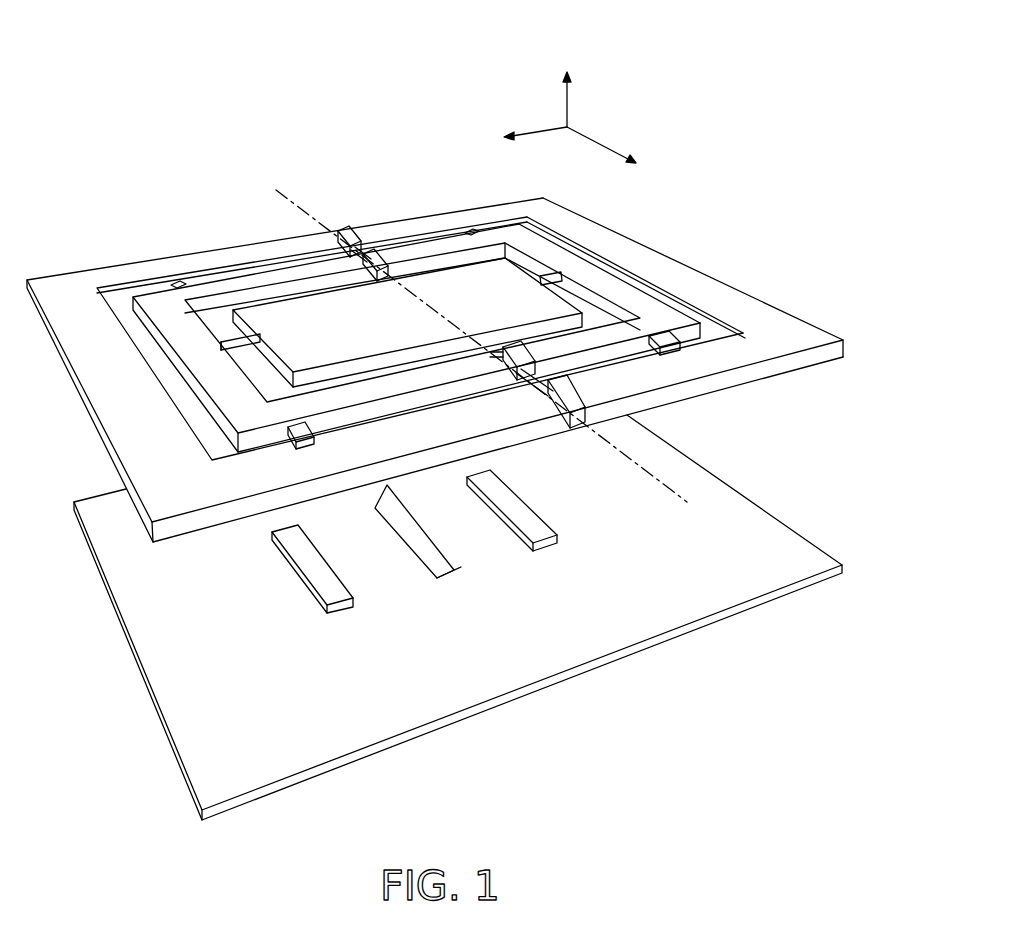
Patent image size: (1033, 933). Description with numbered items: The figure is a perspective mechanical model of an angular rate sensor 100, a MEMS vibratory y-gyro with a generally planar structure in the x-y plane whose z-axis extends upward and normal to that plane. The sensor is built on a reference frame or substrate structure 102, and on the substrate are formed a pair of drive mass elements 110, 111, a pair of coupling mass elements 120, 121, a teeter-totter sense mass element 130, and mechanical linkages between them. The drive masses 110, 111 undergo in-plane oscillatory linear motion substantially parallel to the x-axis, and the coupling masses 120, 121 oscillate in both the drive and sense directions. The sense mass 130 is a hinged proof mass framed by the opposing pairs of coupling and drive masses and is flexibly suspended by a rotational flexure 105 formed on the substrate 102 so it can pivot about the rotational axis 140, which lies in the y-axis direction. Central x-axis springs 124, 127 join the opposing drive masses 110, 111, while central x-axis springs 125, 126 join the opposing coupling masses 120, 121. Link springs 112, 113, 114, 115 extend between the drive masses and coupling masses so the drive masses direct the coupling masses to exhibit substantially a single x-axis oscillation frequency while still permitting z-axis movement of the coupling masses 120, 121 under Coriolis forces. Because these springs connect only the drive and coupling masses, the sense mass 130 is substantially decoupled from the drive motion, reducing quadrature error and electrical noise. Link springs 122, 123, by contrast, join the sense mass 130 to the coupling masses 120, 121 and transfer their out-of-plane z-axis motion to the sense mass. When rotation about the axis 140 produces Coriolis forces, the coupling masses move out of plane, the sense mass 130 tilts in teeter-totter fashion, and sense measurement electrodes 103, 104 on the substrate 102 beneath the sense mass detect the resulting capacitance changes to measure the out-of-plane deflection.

The angular rate sensor 100 is at (736, 62).
The substrate structure 102 is at (261, 731).
The sense measurement electrode 103 is at (306, 563).
The sense measurement electrode 104 is at (513, 511).
The rotational flexure 105 is at (450, 571).
The drive mass element 110 is at (197, 493).
The drive mass element 111 is at (792, 342).
The link spring 112 is at (305, 432).
The link spring 113 is at (177, 283).
The link spring 114 is at (468, 231).
The link spring 115 is at (682, 345).
The coupling mass element 120 is at (264, 418).
The coupling mass element 121 is at (667, 329).
The link spring 122 is at (250, 338).
The link spring 123 is at (538, 277).
The central x-axis spring 124 is at (346, 227).
The central x-axis spring 125 is at (372, 252).
The central x-axis spring 126 is at (521, 347).
The central x-axis spring 127 is at (575, 384).
The sense mass element 130 is at (410, 325).
The rotational axis 140 is at (273, 191).